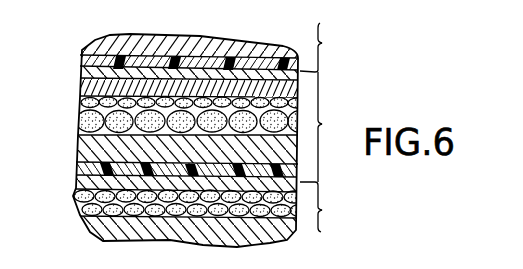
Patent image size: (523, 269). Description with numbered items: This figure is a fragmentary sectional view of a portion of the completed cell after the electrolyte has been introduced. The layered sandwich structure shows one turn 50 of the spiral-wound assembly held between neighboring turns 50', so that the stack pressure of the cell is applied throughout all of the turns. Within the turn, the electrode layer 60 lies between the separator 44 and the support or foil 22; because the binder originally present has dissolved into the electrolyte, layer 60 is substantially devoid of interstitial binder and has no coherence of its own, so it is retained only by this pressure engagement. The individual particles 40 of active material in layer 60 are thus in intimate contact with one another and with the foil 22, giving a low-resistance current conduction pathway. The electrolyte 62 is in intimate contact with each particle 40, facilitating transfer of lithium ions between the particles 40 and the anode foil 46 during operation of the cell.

The support or foil 22 is at (77, 145).
The particles of active material 40 is at (79, 97).
The separator 44 is at (82, 67).
The anode foil 46 is at (82, 51).
The electrode layer 60 is at (71, 123).
The electrolyte 62 is at (133, 88).
The turn of the sandwich structure 50 is at (333, 127).
The neighboring turns 50' is at (328, 127).